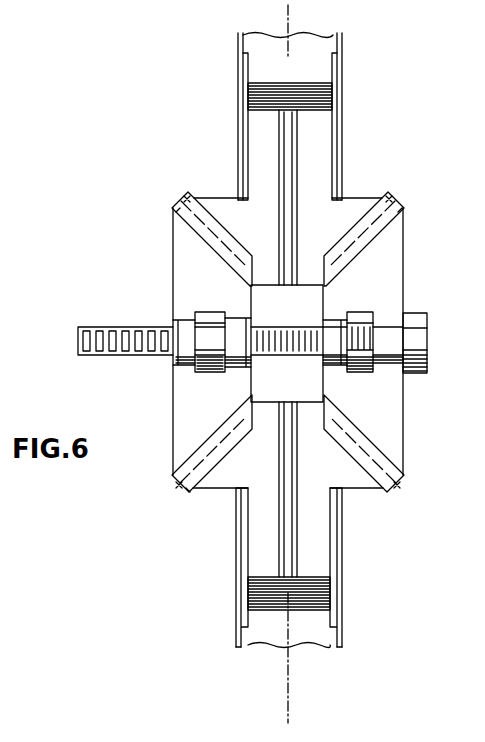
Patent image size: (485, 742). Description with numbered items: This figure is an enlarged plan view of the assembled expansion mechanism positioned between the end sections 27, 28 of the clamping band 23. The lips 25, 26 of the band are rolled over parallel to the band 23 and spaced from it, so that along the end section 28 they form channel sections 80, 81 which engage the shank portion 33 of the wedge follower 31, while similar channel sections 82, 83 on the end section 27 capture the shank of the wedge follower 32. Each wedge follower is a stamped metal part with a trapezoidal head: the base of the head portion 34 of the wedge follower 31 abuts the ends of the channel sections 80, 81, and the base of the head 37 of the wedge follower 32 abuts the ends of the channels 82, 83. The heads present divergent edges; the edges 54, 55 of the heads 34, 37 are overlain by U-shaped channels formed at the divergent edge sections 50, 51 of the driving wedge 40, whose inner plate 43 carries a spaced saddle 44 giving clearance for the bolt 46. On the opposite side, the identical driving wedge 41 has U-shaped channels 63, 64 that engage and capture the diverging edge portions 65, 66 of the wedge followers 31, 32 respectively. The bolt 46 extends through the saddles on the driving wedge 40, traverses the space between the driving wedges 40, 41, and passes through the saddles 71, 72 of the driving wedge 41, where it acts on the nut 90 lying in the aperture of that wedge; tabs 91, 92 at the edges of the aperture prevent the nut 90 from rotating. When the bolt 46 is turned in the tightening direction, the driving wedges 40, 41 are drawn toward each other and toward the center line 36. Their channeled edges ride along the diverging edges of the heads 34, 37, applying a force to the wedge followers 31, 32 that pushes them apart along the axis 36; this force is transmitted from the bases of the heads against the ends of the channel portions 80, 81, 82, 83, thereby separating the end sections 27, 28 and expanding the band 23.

The clamping band 23 is at (318, 642).
The lip 25 is at (238, 38).
The lip 26 is at (342, 42).
The end section 27 is at (352, 606).
The end section 28 is at (356, 146).
The wedge follower 31 is at (262, 216).
The wedge follower 32 is at (352, 490).
The shank portion 33 is at (313, 172).
The trapezoidal head portion 34 is at (353, 205).
The center line 36 is at (290, 88).
The trapezoidal head 37 is at (222, 478).
The driving wedge 40 is at (395, 272).
The driving wedge 41 is at (173, 268).
The inner plate 43 is at (385, 318).
The saddle 44 is at (336, 318).
The bolt 46 is at (428, 346).
The divergent edge section 50 is at (385, 486).
The divergent edge section 51 is at (393, 203).
The divergent edge 54 is at (402, 226).
The divergent edge 55 is at (178, 324).
The U-shaped channel 63 is at (185, 192).
The U-shaped channel 64 is at (176, 479).
The divergent edge 65 is at (176, 214).
The divergent edge 66 is at (190, 446).
The saddle 71 is at (186, 318).
The saddle 72 is at (240, 318).
The channel section 80 is at (342, 113).
The channel section 81 is at (241, 101).
The channel section 82 is at (338, 567).
The channel section 83 is at (236, 549).
The nut 90 is at (178, 362).
The tab 91 is at (212, 310).
The tab 92 is at (210, 373).